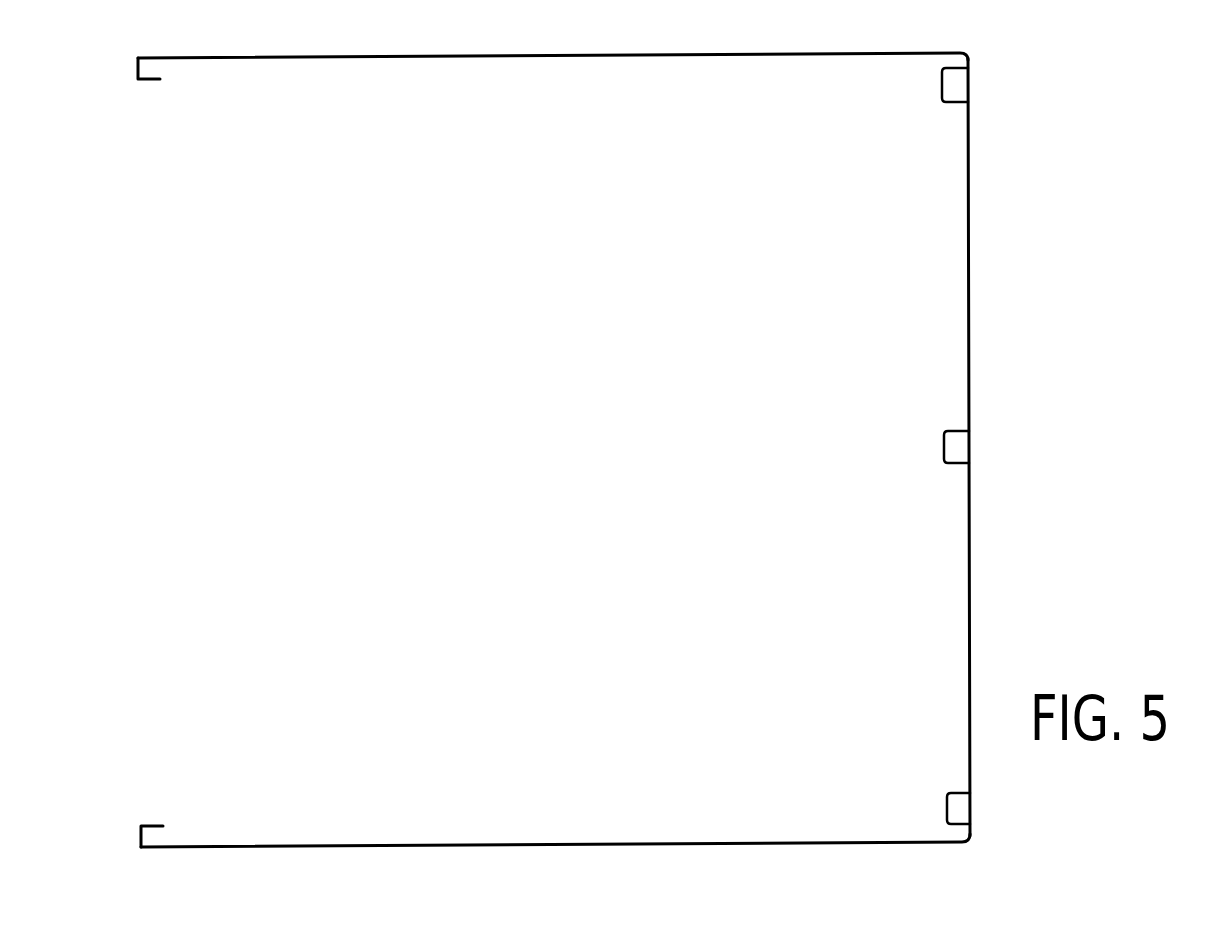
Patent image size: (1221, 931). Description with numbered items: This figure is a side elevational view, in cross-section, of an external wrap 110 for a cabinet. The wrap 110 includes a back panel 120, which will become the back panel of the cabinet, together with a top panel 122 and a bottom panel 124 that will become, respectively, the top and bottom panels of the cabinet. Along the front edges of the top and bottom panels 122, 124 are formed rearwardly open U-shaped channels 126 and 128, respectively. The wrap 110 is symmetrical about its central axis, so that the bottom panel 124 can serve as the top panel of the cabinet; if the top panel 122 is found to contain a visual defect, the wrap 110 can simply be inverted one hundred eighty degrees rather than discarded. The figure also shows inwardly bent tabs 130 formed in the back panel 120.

The external wrap 110 is at (1040, 205).
The back panel 120 is at (971, 568).
The top panel 122 is at (590, 56).
The bottom panel 124 is at (550, 844).
The U-shaped channel 126 is at (136, 67).
The U-shaped channel 128 is at (139, 838).
The inwardly bent tabs 130 is at (952, 83).